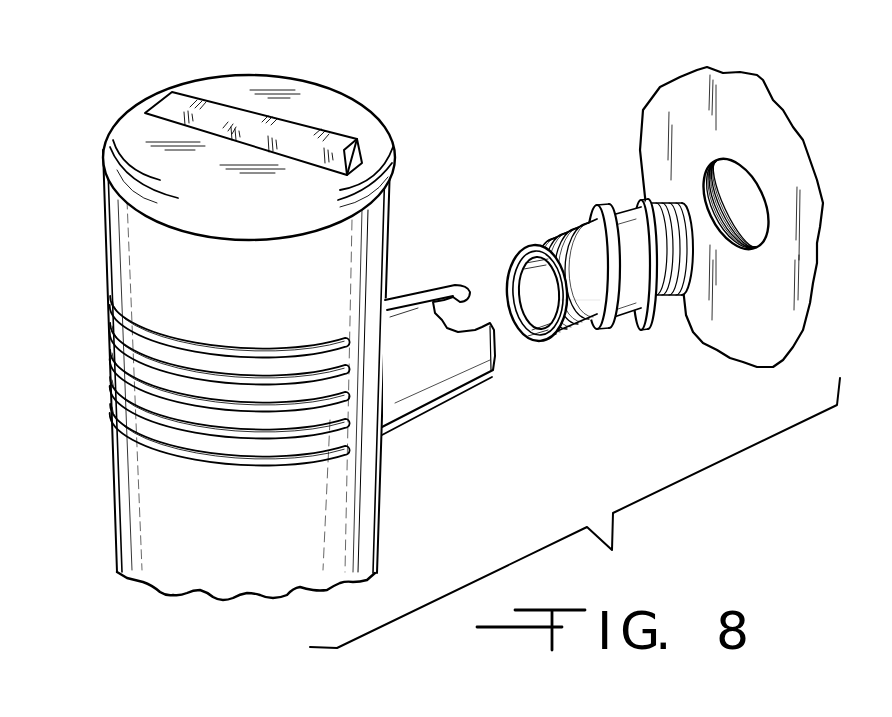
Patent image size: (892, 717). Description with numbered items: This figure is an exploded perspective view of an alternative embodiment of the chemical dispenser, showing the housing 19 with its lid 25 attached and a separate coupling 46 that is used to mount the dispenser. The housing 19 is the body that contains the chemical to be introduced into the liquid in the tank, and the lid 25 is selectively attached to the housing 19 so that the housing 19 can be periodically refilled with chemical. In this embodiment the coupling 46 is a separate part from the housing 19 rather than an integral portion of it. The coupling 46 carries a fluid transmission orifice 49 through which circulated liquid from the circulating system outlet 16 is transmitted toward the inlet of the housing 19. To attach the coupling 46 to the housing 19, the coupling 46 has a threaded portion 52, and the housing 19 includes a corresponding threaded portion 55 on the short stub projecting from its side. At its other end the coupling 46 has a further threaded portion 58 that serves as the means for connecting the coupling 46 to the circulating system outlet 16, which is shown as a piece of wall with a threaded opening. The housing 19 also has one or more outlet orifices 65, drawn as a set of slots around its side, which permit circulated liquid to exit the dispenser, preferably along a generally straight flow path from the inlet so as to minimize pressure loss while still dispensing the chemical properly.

The circulating system outlet 16 is at (723, 150).
The housing 19 is at (104, 232).
The lid 25 is at (288, 76).
The coupling 46 is at (575, 229).
The fluid transmission orifice 49 is at (557, 297).
The threaded portion 52 is at (583, 340).
The threaded portion 55 is at (470, 306).
The threaded portion 58 is at (642, 206).
The outlet orifice 65 is at (226, 348).